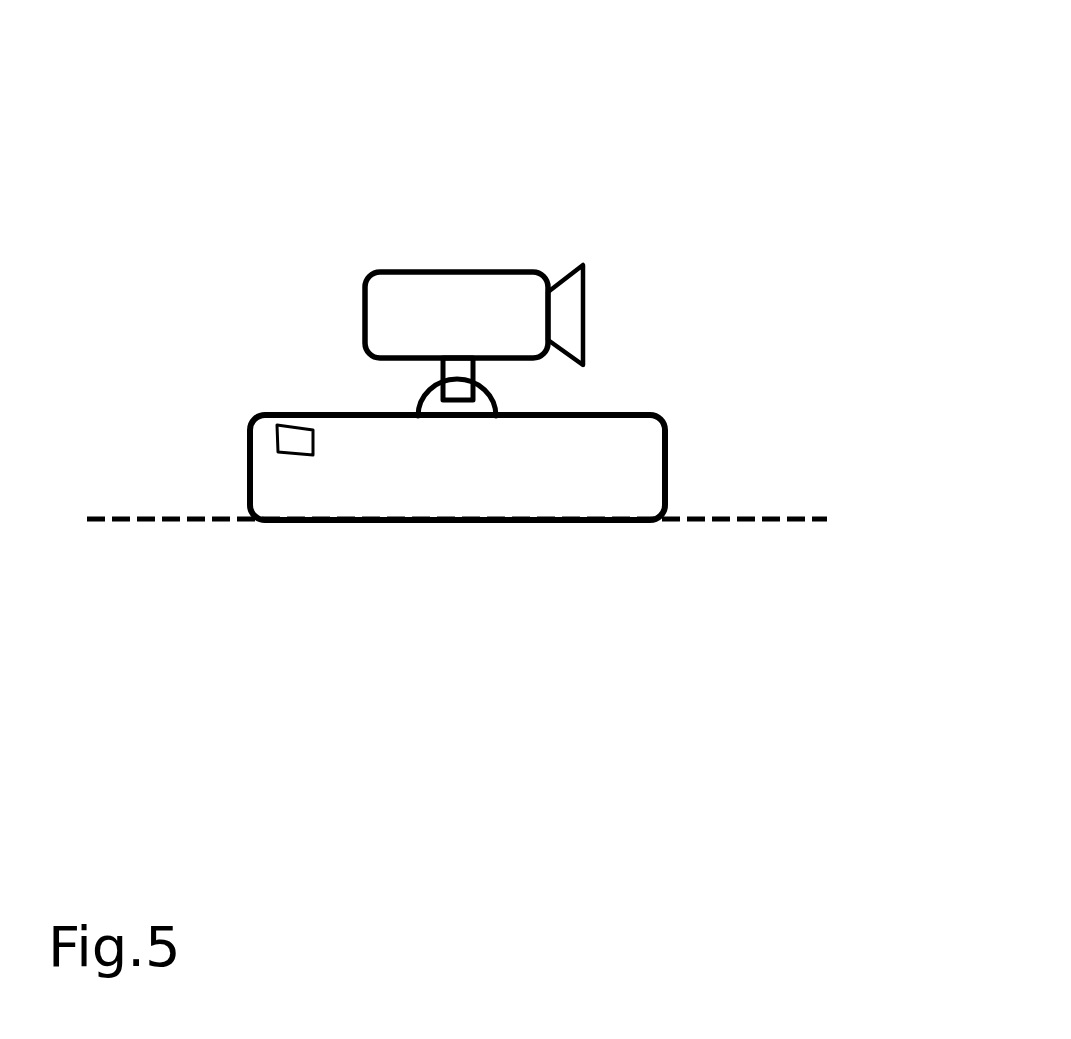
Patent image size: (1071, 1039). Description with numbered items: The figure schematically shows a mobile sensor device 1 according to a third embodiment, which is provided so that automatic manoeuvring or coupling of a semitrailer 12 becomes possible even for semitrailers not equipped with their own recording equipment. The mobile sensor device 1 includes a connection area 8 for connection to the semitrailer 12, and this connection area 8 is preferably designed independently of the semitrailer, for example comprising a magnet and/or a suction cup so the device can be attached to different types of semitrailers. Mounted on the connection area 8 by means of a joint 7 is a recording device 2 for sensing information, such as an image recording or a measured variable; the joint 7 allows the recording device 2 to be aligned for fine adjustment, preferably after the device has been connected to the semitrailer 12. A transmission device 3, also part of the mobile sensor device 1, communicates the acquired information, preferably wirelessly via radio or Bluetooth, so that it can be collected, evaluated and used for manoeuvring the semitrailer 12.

The mobile sensor device 1 is at (703, 148).
The recording device 2 is at (481, 300).
The transmission device 3 is at (290, 438).
The joint 7 is at (492, 401).
The connection area 8 is at (647, 460).
The semitrailer 12 is at (485, 619).